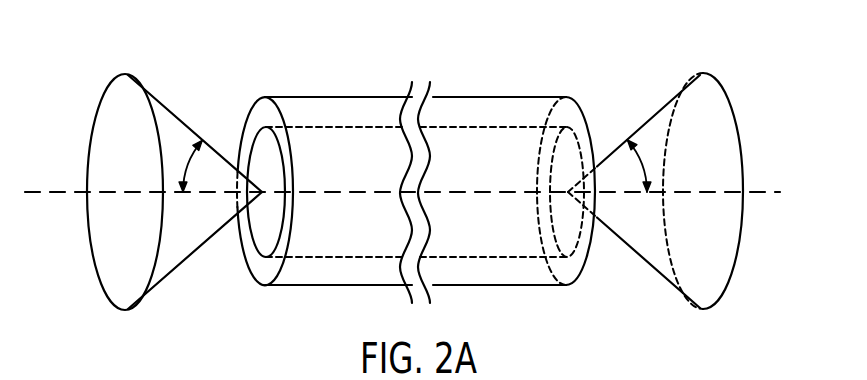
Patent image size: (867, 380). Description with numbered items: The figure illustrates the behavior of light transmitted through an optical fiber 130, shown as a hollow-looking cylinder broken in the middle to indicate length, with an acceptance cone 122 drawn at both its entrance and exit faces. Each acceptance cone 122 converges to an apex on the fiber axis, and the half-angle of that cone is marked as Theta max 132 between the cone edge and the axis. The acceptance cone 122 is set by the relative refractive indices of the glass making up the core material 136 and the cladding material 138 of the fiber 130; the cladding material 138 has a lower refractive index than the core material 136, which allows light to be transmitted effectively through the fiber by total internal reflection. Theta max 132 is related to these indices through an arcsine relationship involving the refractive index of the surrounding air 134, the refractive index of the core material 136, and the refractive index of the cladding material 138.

The acceptance cone 122 is at (113, 267).
The fiber 130 is at (545, 67).
The acceptance cone angle Theta max 132 is at (184, 168).
The air 134 is at (312, 68).
The core material 136 is at (262, 233).
The cladding material 138 is at (264, 270).